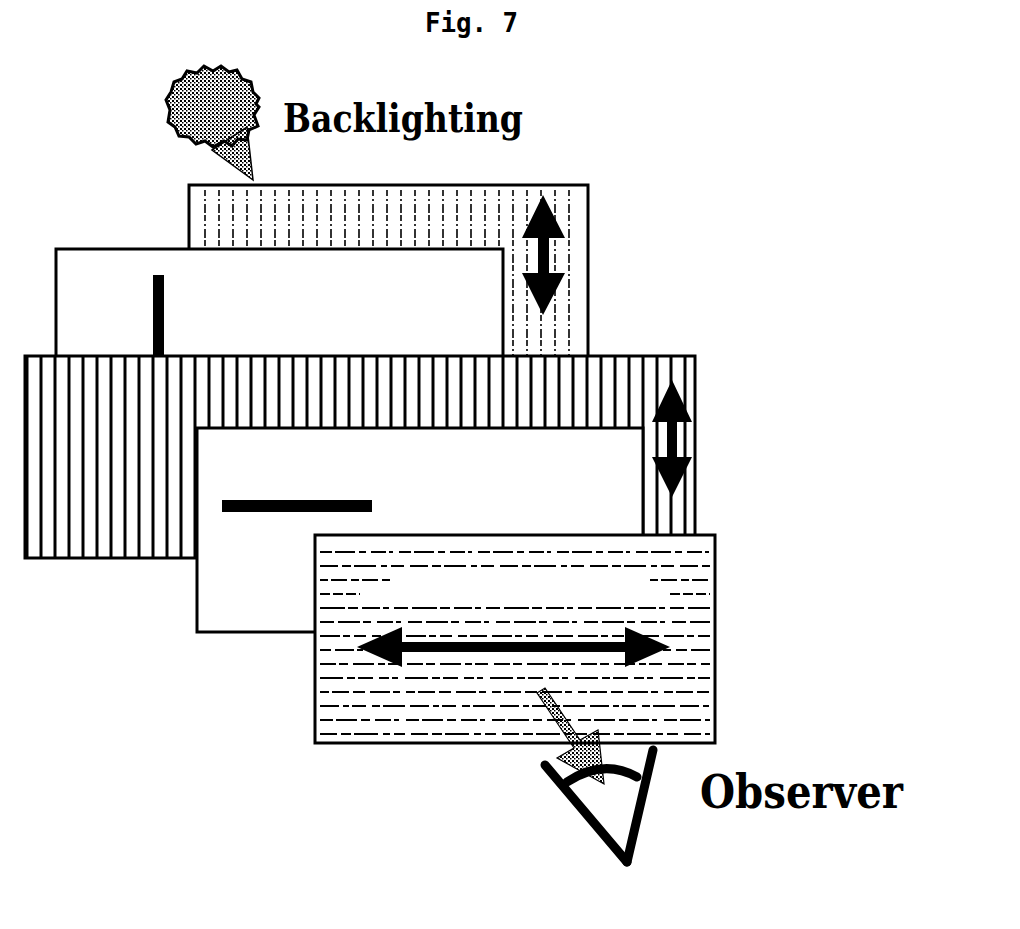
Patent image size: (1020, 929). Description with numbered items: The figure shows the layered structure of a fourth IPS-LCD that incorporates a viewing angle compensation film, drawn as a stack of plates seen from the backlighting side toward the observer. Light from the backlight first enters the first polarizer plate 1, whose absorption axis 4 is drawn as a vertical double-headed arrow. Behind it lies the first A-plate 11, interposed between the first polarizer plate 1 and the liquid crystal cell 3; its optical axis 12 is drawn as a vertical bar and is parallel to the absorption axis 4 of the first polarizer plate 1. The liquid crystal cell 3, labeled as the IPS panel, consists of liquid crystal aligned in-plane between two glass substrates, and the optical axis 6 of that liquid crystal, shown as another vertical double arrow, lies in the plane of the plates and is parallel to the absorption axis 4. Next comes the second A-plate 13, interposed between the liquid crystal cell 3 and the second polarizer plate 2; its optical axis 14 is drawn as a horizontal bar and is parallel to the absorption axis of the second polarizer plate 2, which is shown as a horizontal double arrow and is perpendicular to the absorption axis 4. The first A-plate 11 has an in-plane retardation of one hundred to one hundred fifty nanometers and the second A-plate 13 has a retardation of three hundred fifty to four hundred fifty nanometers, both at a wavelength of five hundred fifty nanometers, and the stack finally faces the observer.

The first polarizer plate 1 is at (388, 271).
The second polarizer plate 2 is at (515, 639).
The liquid crystal cell 3 is at (360, 457).
The absorption axis of the first polarizer plate 4 is at (578, 255).
The optical axis of the liquid crystal 6 is at (642, 438).
The first A-plate 11 is at (279, 303).
The optical axis of the first A-plate 12 is at (120, 316).
The second A-plate 13 is at (420, 530).
The optical axis of the second A-plate 14 is at (292, 483).